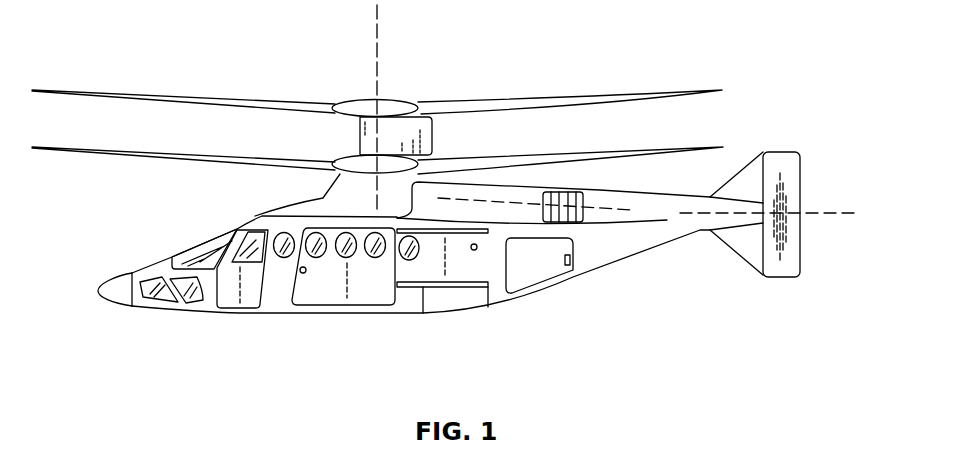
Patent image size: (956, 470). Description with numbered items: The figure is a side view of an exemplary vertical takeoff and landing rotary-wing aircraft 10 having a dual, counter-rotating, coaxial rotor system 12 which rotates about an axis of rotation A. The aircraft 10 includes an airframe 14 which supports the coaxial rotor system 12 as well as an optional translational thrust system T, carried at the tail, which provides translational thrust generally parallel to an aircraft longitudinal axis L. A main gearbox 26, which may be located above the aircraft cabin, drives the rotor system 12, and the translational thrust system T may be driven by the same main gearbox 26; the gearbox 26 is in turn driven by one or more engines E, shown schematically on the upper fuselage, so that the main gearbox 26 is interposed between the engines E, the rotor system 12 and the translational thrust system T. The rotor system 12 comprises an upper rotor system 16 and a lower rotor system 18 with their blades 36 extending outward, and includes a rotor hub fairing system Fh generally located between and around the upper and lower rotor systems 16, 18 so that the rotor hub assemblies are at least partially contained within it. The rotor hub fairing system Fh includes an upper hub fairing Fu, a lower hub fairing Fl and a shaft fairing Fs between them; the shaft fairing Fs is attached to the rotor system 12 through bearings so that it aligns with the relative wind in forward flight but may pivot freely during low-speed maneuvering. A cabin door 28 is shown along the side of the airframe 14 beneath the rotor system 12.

The rotary-wing aircraft 10 is at (456, 55).
The dual, counter-rotating, coaxial rotor system 12 is at (398, 95).
The airframe 14 is at (257, 216).
The upper rotor system 16 is at (418, 97).
The lower rotor system 18 is at (329, 171).
The main gearbox 26 is at (308, 208).
The cabin door 28 is at (377, 297).
The rotor blade 36 is at (320, 115).
The axis of rotation A is at (375, 38).
The engines E is at (513, 202).
The translational thrust system T is at (787, 130).
The aircraft longitudinal axis L is at (823, 214).
The upper hub fairing Fu is at (346, 97).
The lower hub fairing Fl is at (342, 154).
The shaft fairing Fs is at (432, 145).
The rotor hub fairing system Fh is at (560, 141).